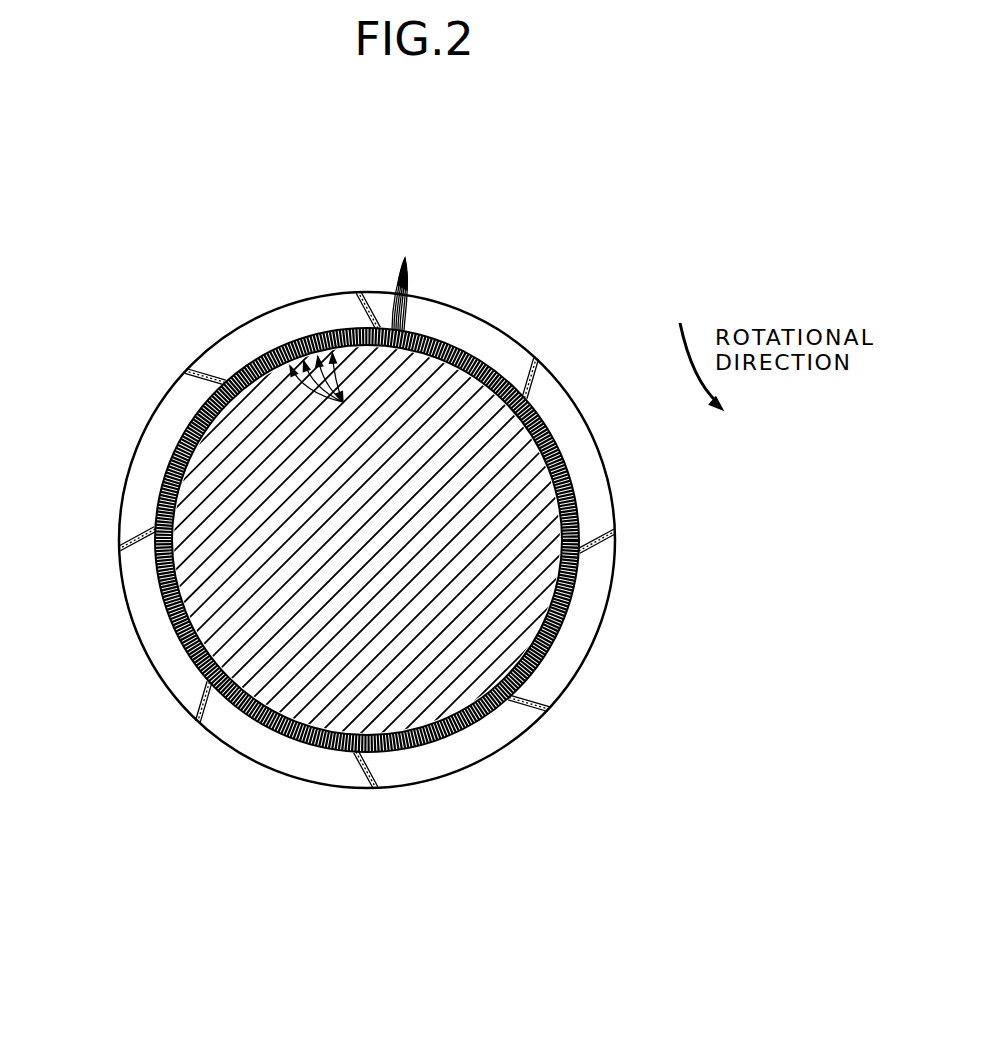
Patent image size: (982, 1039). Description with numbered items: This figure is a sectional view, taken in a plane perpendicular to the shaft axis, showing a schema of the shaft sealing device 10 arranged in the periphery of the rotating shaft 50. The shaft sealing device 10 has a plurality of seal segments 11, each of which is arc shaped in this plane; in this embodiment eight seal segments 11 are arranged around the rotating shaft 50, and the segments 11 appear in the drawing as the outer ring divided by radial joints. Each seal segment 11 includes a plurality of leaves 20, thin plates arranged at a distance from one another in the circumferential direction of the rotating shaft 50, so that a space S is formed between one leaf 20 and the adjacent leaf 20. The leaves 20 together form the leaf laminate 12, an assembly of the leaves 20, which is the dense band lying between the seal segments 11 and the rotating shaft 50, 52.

The shaft sealing device 10 is at (600, 282).
The seal segment 11 is at (440, 297).
The leaf laminate 12 is at (487, 359).
The leaf 20 is at (397, 281).
The rotating shaft 50 is at (458, 540).
The core surface layer 52 is at (523, 438).
The space S is at (327, 385).